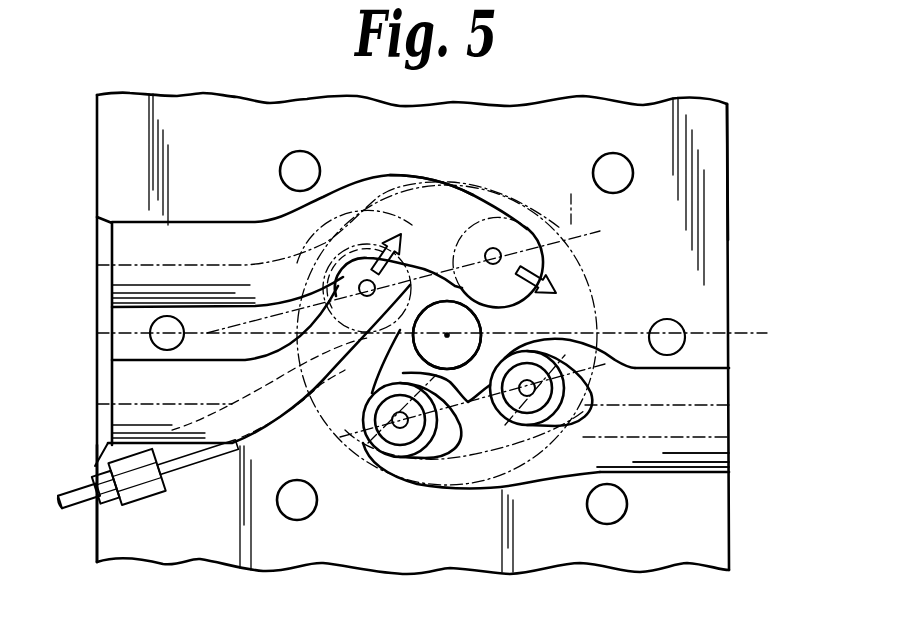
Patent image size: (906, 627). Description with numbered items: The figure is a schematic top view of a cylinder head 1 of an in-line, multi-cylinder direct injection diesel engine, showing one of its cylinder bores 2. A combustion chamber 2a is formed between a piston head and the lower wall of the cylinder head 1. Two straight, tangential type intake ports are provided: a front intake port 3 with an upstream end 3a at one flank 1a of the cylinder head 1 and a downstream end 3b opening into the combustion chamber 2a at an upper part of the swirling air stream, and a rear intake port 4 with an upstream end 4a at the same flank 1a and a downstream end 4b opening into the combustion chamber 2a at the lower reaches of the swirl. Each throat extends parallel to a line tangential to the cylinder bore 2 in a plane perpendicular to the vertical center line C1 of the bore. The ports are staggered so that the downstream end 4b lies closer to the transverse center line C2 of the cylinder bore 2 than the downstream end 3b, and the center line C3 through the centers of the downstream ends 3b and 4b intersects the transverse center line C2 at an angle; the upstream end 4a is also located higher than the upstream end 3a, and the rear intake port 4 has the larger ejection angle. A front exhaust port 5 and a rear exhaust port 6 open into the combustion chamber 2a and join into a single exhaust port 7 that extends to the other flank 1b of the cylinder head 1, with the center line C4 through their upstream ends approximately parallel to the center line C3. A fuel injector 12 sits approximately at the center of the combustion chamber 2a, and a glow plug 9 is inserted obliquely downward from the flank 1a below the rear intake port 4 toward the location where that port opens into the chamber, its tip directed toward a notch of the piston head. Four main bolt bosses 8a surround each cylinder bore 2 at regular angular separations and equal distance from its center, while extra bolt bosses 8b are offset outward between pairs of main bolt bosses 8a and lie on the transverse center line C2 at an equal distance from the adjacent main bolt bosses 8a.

The cylinder head 1 is at (97, 160).
The flank 1a is at (97, 533).
The flank 1b is at (729, 122).
The cylinder bore 2 is at (372, 198).
The combustion chamber 2a is at (577, 260).
The front intake port 3 is at (398, 186).
The upstream end of front intake port 3a is at (97, 240).
The downstream end of front intake port 3b is at (516, 218).
The rear intake port 4 is at (327, 413).
The upstream end of rear intake port 4a is at (97, 408).
The downstream end of rear intake port 4b is at (417, 264).
The front exhaust port 5 is at (363, 452).
The rear exhaust port 6 is at (492, 400).
The single exhaust port 7 is at (660, 455).
The main bolt bosses 8a is at (280, 171).
The extra bolt bosses 8b is at (150, 330).
The glow plug 9 is at (174, 472).
The fuel injector 12 is at (481, 322).
The vertical center line of cylinder bore C1 is at (446, 333).
The transverse center line of cylinder bore C2 is at (752, 336).
The center line of intake port openings C3 is at (571, 195).
The center line of exhaust port openings C4 is at (600, 372).